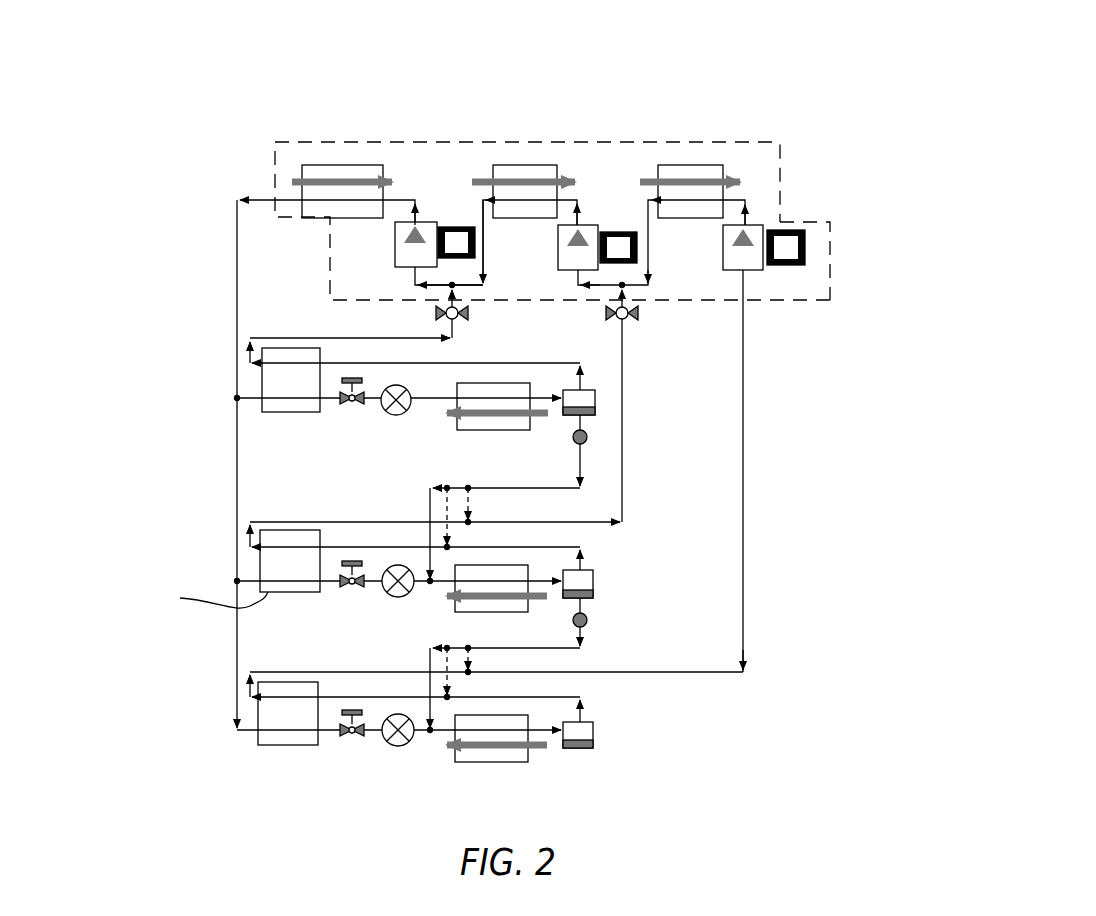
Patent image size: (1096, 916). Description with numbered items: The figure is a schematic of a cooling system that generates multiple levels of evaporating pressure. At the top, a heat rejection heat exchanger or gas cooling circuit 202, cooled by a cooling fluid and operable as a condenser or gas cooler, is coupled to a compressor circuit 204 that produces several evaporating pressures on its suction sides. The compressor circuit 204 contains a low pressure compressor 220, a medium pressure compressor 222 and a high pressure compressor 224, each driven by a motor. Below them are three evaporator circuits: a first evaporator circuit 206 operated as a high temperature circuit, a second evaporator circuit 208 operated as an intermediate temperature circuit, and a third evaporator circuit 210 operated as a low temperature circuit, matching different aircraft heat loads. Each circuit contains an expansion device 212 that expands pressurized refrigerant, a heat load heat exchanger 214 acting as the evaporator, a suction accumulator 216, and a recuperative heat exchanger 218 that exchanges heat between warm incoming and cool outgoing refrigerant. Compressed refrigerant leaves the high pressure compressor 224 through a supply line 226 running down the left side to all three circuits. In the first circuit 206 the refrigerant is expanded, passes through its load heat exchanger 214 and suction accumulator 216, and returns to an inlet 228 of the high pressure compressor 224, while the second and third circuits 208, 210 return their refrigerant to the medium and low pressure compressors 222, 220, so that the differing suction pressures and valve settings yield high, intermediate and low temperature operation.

The heat rejection heat exchanger circuit 202 is at (812, 76).
The compressor circuit 204 is at (830, 232).
The first evaporator circuit 206 is at (180, 366).
The second evaporator circuit 208 is at (202, 571).
The third evaporator circuit 210 is at (208, 684).
The expansion device 212 is at (393, 417).
The heat load heat exchanger 214 is at (494, 431).
The suction accumulator 216 is at (600, 398).
The recuperative heat exchanger 218 is at (288, 414).
The low pressure compressor 220 is at (764, 271).
The medium pressure compressor 222 is at (557, 250).
The high pressure compressor 224 is at (395, 248).
The supply line 226 is at (235, 256).
The inlet 228 is at (457, 291).